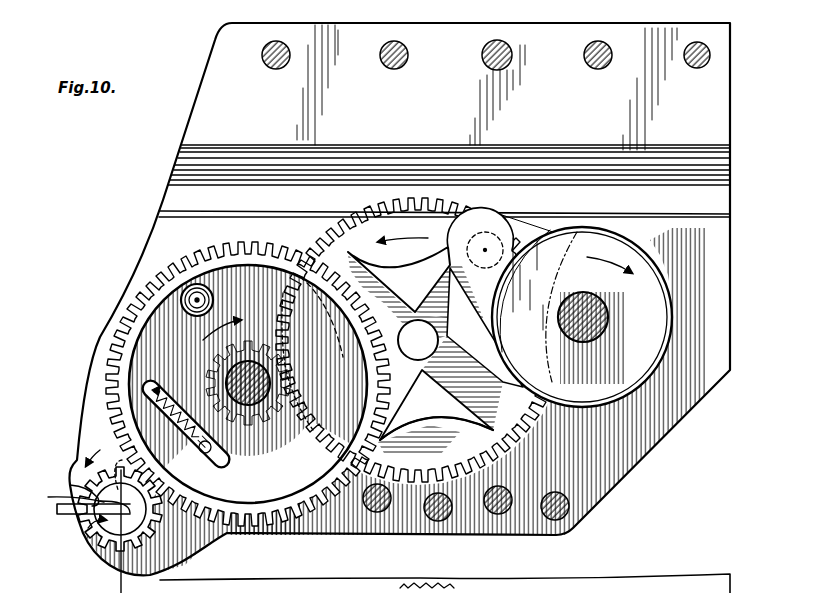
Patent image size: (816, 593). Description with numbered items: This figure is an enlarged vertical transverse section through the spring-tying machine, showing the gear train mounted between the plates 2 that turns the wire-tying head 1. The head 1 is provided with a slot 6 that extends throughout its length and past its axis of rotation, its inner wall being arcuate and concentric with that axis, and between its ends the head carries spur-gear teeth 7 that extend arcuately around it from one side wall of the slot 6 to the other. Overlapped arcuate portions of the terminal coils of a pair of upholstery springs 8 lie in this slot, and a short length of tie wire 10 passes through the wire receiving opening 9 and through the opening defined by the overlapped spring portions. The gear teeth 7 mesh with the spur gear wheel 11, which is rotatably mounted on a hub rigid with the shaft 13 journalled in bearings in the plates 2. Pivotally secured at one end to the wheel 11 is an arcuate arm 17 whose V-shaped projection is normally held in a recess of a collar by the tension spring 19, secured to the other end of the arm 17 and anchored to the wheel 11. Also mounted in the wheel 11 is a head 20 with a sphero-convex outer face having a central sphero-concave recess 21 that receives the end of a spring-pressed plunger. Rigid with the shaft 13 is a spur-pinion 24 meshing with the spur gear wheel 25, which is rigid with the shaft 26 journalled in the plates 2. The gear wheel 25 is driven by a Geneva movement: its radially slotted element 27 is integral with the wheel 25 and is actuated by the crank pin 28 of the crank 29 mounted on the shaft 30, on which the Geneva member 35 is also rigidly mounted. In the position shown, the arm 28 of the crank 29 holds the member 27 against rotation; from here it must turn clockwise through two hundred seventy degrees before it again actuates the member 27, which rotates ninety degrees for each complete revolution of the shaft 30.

The head 1 is at (98, 525).
The plates 2 is at (722, 247).
The slot 6 is at (67, 497).
The spur-gear teeth 7 is at (75, 486).
The springs 8 is at (58, 512).
The wire receiving opening 9 is at (120, 470).
The tie wire 10 is at (119, 580).
The spur gear wheel 11 is at (232, 250).
The shaft 13 is at (252, 406).
The arcuate arm 17 is at (214, 454).
The tension spring 19 is at (178, 404).
The head 20 is at (213, 305).
The sphero-concave recess 21 is at (195, 290).
The spur-pinion 24 is at (282, 348).
The spur gear wheel 25 is at (538, 424).
The shaft 26 is at (418, 340).
The radially slotted element 27 is at (440, 412).
The crank pin 28 is at (508, 226).
The crank 29 is at (556, 232).
The shaft 30 is at (584, 302).
The member of the Geneva movement mechanism 35 is at (660, 343).